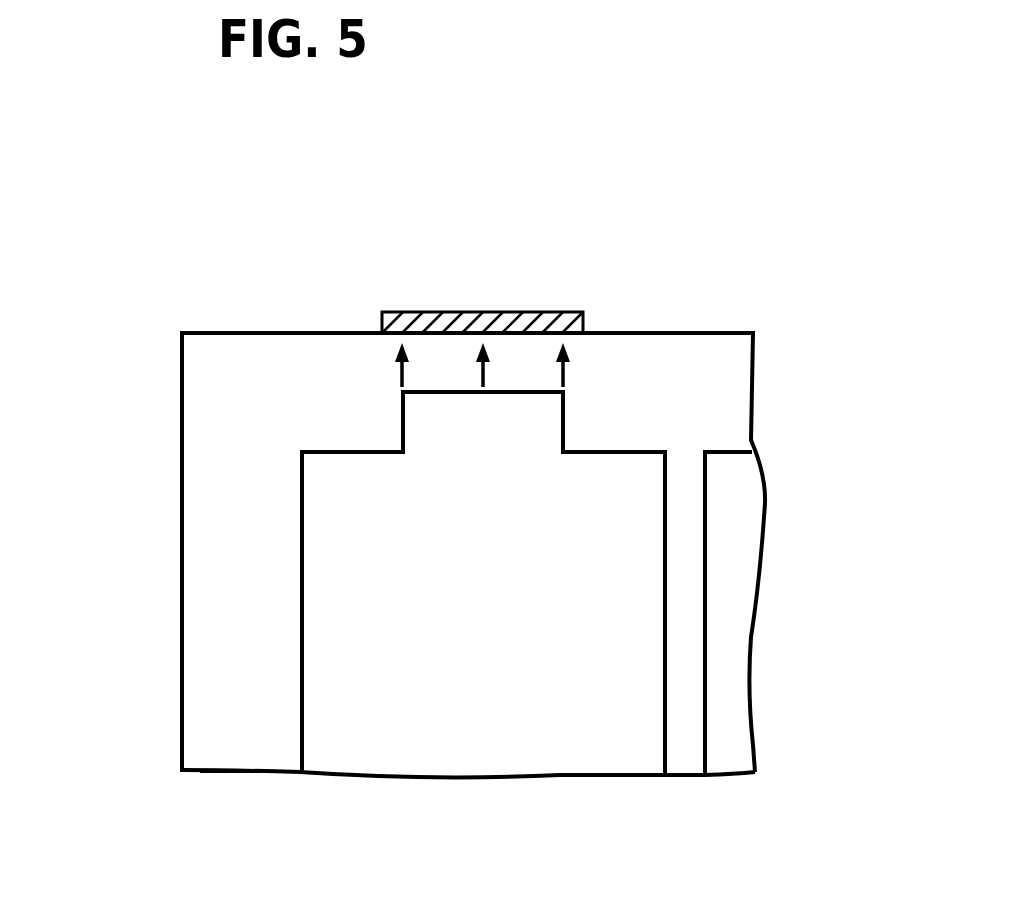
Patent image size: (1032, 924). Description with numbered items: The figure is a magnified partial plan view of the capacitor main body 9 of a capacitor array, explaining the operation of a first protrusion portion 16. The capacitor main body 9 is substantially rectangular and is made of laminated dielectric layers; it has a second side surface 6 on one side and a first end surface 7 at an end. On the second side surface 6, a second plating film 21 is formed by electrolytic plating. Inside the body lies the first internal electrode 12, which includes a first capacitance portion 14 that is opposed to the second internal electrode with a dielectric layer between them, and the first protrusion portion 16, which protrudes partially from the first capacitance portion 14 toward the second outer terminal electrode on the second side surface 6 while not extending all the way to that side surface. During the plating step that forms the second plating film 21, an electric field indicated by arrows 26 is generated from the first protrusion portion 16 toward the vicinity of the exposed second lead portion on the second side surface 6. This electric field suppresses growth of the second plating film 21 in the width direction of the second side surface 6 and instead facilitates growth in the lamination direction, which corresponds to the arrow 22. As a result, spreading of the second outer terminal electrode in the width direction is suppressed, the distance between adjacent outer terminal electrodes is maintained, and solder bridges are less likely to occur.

The second side surface 6 is at (733, 330).
The first end surface 7 is at (182, 761).
The capacitor main body 9 is at (231, 782).
The first internal electrode 12 is at (286, 658).
The first capacitance portion 14 is at (343, 558).
The first protrusion portion 16 is at (415, 424).
The second plating film 21 is at (492, 312).
The arrow indicating growth in the lamination direction 22 is at (733, 371).
The arrows indicating electric field 26 is at (567, 372).